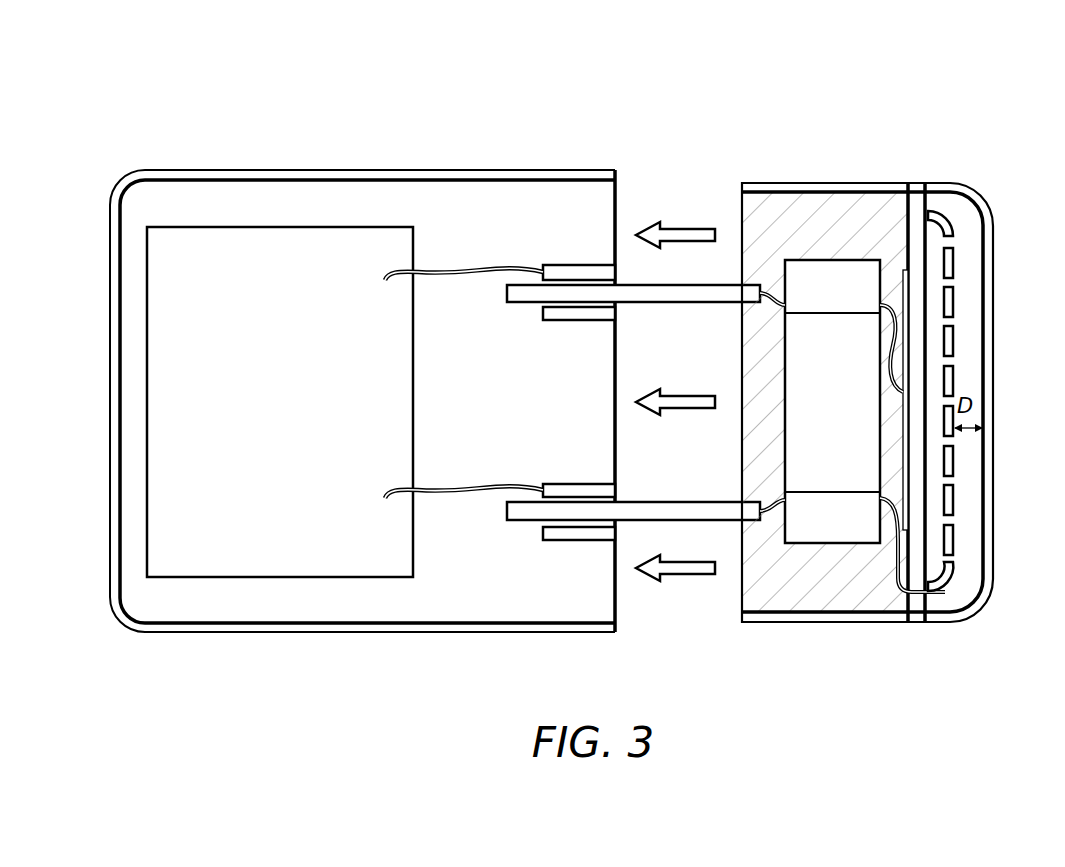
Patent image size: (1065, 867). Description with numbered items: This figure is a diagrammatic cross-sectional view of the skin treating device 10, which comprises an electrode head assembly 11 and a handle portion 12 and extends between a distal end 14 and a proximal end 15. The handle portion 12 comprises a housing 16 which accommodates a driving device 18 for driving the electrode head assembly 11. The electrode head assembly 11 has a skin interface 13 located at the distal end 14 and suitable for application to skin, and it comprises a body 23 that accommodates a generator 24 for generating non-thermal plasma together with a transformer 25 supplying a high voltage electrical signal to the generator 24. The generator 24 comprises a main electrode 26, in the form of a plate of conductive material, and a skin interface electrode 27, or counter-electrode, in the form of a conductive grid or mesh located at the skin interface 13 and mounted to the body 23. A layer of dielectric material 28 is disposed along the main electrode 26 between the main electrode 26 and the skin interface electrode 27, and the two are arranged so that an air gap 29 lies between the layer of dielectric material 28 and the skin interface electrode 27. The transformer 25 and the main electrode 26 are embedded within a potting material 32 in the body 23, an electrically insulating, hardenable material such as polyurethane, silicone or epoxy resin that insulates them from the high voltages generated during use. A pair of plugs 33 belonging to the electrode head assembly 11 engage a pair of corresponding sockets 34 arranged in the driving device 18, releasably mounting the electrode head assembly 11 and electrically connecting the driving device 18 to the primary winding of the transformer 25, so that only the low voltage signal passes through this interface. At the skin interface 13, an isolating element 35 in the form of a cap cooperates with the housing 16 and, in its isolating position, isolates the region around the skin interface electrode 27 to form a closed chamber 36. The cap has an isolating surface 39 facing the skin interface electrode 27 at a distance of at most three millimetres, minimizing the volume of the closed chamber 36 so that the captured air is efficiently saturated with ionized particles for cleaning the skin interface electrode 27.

The device 10 is at (995, 125).
The electrode head assembly 11 is at (760, 640).
The handle portion 12 is at (372, 652).
The skin interface 13 is at (970, 246).
The distal end 14 is at (945, 637).
The proximal end 15 is at (300, 122).
The housing 16 is at (172, 636).
The driving device 18 is at (266, 414).
The body 23 is at (885, 625).
The generator 24 is at (902, 245).
The transformer 25 is at (816, 412).
The main electrode 26 is at (922, 450).
The skin interface electrode 27 is at (958, 378).
The layer of dielectric material 28 is at (917, 560).
The air gap 29 is at (937, 300).
The potting material 32 is at (810, 598).
The plugs 33 is at (682, 306).
The sockets 34 is at (563, 262).
The isolating element 35 is at (995, 278).
The closed chamber 36 is at (968, 563).
The isolating surface 39 is at (983, 535).